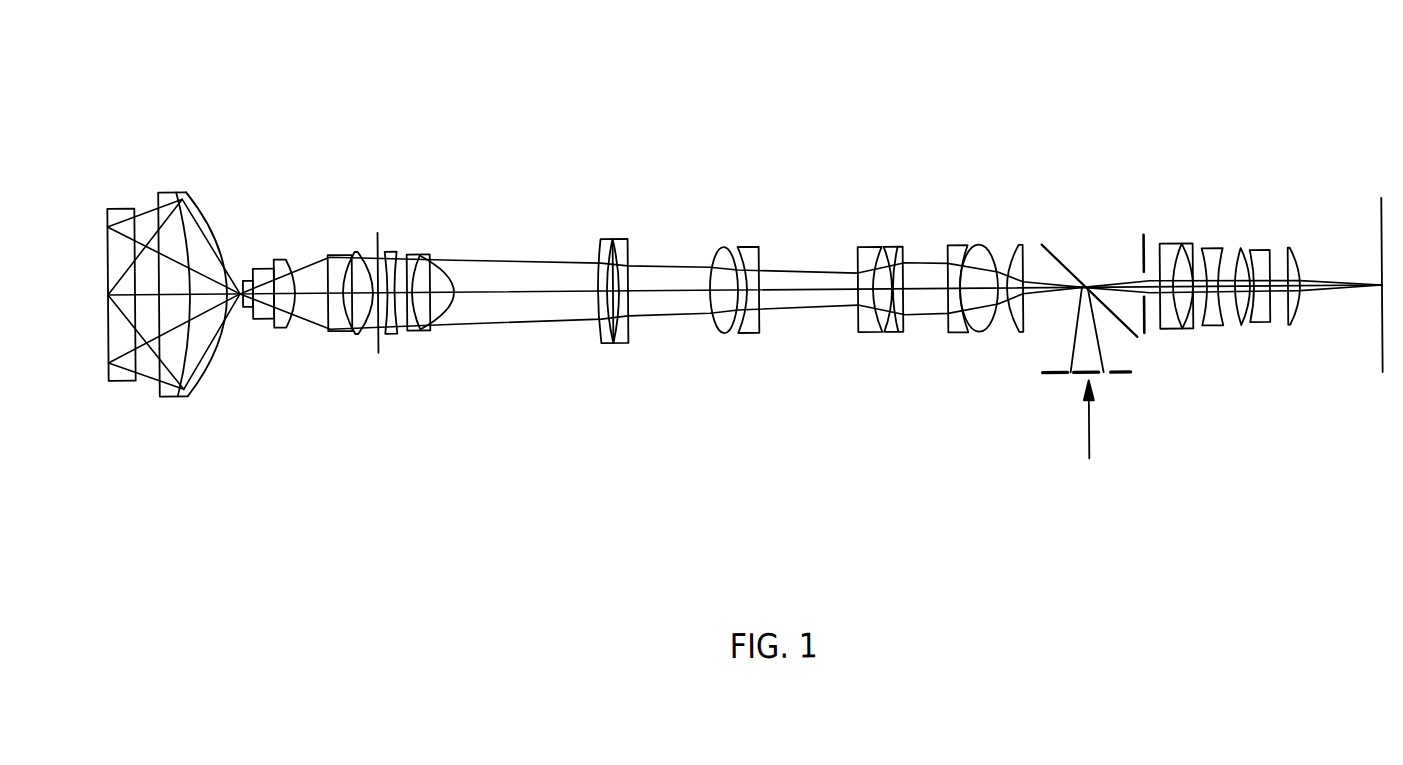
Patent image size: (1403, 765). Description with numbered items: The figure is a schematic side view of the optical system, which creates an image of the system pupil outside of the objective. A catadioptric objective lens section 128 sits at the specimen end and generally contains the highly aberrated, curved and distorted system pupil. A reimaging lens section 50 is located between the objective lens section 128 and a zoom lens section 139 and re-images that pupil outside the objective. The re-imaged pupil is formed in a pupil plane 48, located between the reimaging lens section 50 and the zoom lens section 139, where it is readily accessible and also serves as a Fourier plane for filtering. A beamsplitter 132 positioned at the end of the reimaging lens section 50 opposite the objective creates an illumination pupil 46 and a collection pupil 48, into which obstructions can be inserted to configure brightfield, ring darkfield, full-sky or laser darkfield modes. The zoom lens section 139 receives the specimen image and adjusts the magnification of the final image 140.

The catadioptric objective lens section 128 is at (651, 142).
The reimaging lens section 50 is at (1050, 183).
The beamsplitter 132 is at (1043, 252).
The pupil plane 48 is at (1143, 238).
The illumination pupil 46 is at (1137, 380).
The zoom lens section 139 is at (1308, 184).
The image 140 is at (1380, 370).